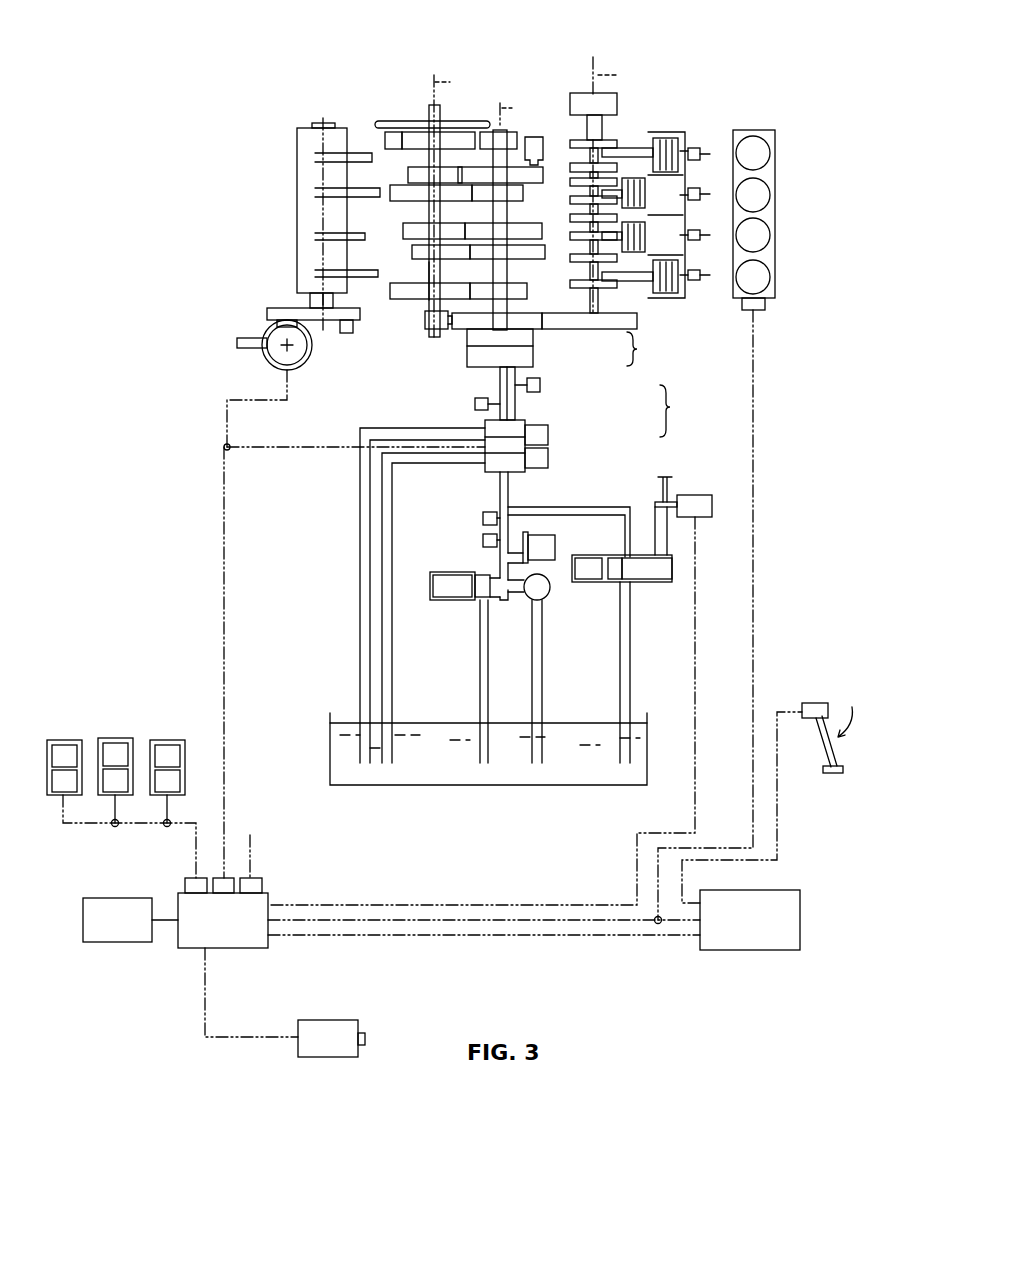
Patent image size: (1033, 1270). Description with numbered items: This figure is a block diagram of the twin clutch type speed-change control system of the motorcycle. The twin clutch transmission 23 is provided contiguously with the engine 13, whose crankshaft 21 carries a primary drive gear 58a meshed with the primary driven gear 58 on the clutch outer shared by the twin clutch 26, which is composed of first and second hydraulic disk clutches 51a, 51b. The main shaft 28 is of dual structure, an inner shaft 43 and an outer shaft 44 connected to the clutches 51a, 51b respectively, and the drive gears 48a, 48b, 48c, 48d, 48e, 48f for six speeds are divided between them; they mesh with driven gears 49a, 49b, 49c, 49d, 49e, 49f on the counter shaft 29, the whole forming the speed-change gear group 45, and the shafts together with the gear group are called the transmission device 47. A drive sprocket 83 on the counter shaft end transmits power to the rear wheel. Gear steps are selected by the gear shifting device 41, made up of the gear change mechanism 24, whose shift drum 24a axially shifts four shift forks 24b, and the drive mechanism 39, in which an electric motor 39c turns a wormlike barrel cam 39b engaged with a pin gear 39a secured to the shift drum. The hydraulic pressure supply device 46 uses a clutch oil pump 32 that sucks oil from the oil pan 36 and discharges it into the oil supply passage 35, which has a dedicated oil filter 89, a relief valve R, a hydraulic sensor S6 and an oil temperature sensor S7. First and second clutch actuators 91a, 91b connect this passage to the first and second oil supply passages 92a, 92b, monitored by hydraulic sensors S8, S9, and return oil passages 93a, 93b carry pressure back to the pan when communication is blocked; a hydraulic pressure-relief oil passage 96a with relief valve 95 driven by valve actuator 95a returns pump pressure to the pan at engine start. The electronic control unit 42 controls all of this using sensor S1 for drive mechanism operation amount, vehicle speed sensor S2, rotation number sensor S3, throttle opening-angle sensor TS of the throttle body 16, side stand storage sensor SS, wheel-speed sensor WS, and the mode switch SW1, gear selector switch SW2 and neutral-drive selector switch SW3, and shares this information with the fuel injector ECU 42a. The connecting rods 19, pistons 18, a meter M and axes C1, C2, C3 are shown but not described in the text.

The engine 13 is at (708, 88).
The throttle body 16 is at (762, 130).
The piston 18 is at (658, 138).
The connecting rod 19 is at (633, 152).
The crankshaft 21 is at (590, 130).
The twin clutch transmission 23 is at (668, 378).
The gear change mechanism 24 is at (292, 185).
The shift drum 24a is at (297, 140).
The shift forks 24b is at (337, 190).
The twin clutch 26 is at (679, 411).
The main shaft 28 is at (646, 351).
The counter shaft 29 is at (428, 276).
The clutch oil pump 32 is at (530, 600).
The oil supply passage 35 is at (509, 522).
The oil pan 36 is at (574, 786).
The drive mechanism 39 is at (248, 325).
The pin gear 39a is at (350, 333).
The barrel cam 39b is at (282, 358).
The electric motor 39c is at (263, 357).
The gear shifting device 41 is at (175, 270).
The electronic control unit 42 is at (190, 948).
The ECU for fuel injector 42a is at (743, 950).
The inner shaft 43 is at (512, 312).
The outer shaft 44 is at (507, 307).
The speed-change gear group 45 is at (573, 165).
The transmission device 47 is at (593, 226).
The hydraulic pressure supply device 46 is at (627, 460).
The drive gear 48a is at (485, 140).
The drive gear 48b is at (540, 287).
The drive gear 48c is at (513, 200).
The drive gear 48d is at (483, 230).
The drive gear 48e is at (477, 175).
The drive gear 48f is at (485, 252).
The driven gear 49a is at (417, 140).
The driven gear 49b is at (390, 292).
The driven gear 49c is at (403, 188).
The driven gear 49d is at (403, 227).
The driven gear 49e is at (402, 132).
The driven gear 49f is at (412, 255).
The first hydraulic disk clutch 51a is at (540, 358).
The second hydraulic disk clutch 51b is at (540, 341).
The primary driven gear 58 is at (475, 330).
The primary drive gear 58a is at (637, 322).
The drive sprocket 83 is at (458, 121).
The oil filter 89 is at (553, 560).
The first clutch actuator 91a is at (548, 435).
The second clutch actuator 91b is at (548, 458).
The first oil supply passage 92a is at (499, 388).
The second oil supply passage 92b is at (516, 408).
The return oil passage 93a is at (359, 571).
The return oil passage 93b is at (393, 672).
The hydraulic pressure-relief valve 95 is at (655, 583).
The valve actuator 95a is at (707, 495).
The hydraulic pressure-relief oil passage 96a is at (602, 516).
The crankshaft axis C1 is at (621, 77).
The main shaft axis C2 is at (511, 199).
The counter shaft axis C3 is at (450, 198).
The sensor S1 is at (236, 342).
The vehicle speed sensor S2 is at (534, 140).
The rotation number sensor S3 is at (425, 322).
The hydraulic sensor S6 is at (482, 516).
The oil temperature sensor S7 is at (482, 542).
The hydraulic sensor S8 is at (474, 406).
The hydraulic sensor S9 is at (546, 387).
The mode switch SW1 is at (125, 738).
The gear selector switch SW2 is at (65, 740).
The neutral-drive selector switch SW3 is at (178, 740).
The opening-angle sensor TS is at (767, 305).
The storage sensor SS is at (818, 703).
The meter M is at (113, 942).
The wheel-speed sensor WS is at (323, 1057).
The relief valve R is at (445, 600).